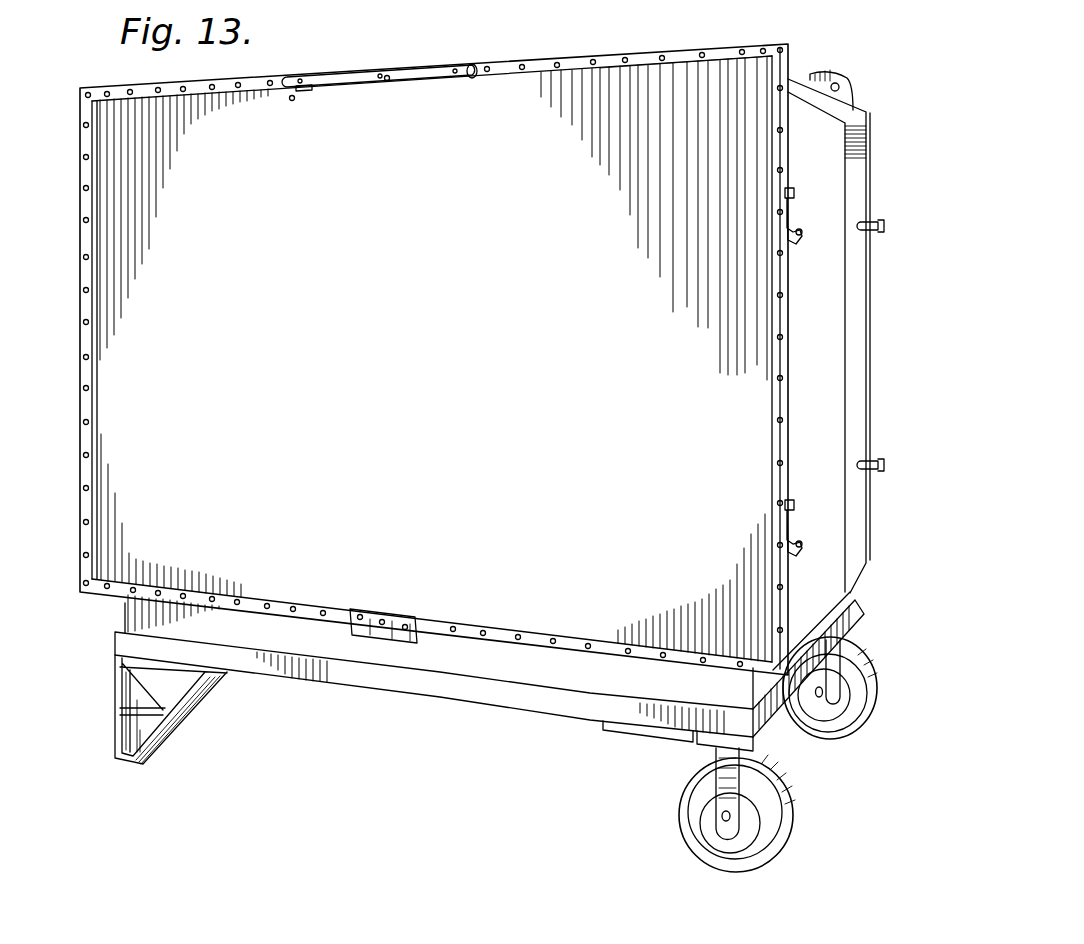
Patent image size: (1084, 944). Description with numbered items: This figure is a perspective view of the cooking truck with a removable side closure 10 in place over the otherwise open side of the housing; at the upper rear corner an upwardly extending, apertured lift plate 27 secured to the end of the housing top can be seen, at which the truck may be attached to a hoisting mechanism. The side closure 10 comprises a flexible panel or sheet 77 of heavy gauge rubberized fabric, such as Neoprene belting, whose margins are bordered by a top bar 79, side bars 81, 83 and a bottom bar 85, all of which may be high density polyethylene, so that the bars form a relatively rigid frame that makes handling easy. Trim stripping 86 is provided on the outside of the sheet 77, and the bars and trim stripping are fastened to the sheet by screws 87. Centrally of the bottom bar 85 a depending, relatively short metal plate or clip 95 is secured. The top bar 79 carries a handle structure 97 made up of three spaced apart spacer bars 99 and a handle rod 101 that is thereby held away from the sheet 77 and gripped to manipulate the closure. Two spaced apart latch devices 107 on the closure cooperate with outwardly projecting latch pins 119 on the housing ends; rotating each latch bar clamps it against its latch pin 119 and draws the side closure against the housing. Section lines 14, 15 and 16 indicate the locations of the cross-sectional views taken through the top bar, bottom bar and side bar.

The side closure 10 is at (100, 215).
The section line 14- 14 is at (353, 31).
The section line 15- 15 is at (327, 564).
The section line 16- 16 is at (755, 603).
The lift plate 27 is at (846, 96).
The flexible panel or sheet 77 is at (683, 70).
The top bar 79 is at (575, 63).
The side bar 81 is at (86, 333).
The side bar 83 is at (783, 332).
The bottom bar 85 is at (527, 640).
The trim stripping 86 is at (770, 79).
The screws 87 is at (183, 97).
The metal plate or clip 95 is at (416, 626).
The handle structure 97 is at (330, 66).
The spacer bars 99 is at (292, 100).
The handle rod 101 is at (303, 91).
The latch device 107 is at (795, 196).
The latch pin 119 is at (883, 226).